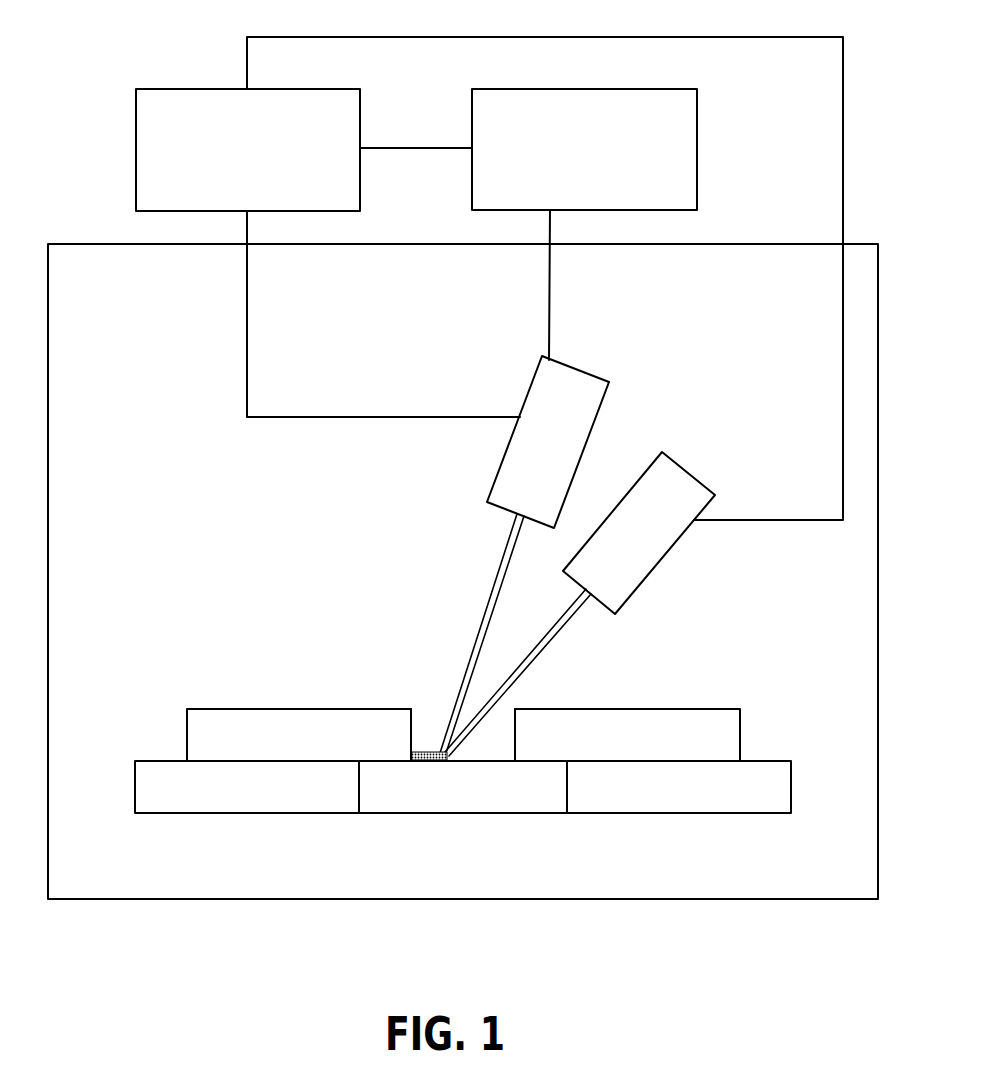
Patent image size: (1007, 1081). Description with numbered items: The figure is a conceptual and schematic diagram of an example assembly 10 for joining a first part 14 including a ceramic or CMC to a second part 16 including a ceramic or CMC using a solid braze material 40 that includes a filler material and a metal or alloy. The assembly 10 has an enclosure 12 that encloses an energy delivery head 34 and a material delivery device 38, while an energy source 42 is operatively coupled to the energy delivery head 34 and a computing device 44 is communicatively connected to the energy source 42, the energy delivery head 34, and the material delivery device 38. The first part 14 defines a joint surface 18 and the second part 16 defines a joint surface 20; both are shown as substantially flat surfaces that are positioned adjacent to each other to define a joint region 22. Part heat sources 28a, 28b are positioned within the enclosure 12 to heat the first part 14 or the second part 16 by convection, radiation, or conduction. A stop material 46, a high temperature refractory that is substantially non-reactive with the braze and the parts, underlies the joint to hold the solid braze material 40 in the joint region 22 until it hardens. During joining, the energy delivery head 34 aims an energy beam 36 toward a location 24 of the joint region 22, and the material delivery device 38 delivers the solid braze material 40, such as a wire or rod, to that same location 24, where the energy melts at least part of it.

The assembly 10 is at (122, 224).
The enclosure 12 is at (757, 243).
The first part 14 is at (187, 735).
The second part 16 is at (740, 735).
The joint surface 18 is at (411, 735).
The joint surface 20 is at (515, 735).
The joint region 22 is at (432, 695).
The location 24 is at (449, 762).
The part heat source 28a is at (143, 787).
The part heat source 28b is at (775, 787).
The energy delivery head 34 is at (594, 391).
The energy beam 36 is at (489, 581).
The material delivery device 38 is at (700, 496).
The solid braze material 40 is at (573, 613).
The energy source 42 is at (571, 188).
The computing device 44 is at (235, 188).
The stop material 46 is at (547, 805).